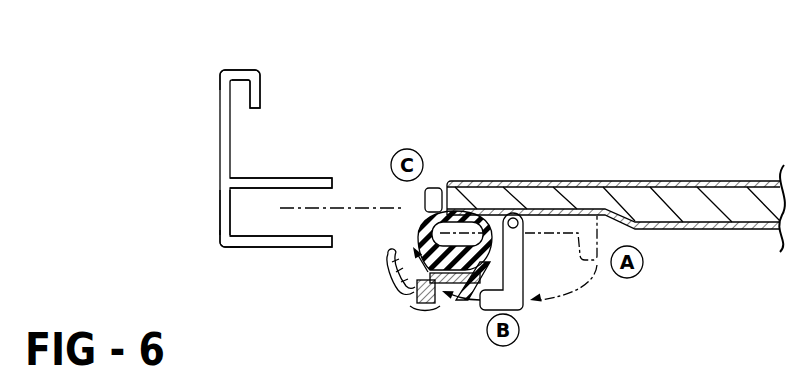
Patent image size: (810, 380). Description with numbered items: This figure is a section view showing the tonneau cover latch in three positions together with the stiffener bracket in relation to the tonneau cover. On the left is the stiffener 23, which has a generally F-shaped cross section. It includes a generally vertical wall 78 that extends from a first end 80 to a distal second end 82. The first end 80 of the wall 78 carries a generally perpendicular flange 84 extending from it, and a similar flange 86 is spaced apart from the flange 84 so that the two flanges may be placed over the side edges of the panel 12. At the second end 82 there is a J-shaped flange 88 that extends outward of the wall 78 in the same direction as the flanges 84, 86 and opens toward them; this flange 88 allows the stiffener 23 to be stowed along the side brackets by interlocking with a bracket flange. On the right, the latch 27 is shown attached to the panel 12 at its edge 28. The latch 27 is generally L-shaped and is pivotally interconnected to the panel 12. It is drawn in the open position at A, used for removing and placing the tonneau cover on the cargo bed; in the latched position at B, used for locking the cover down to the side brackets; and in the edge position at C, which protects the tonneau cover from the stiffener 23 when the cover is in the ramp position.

The panel 12 is at (646, 168).
The stiffener 23 is at (221, 152).
The latch 27 is at (622, 228).
The edge 28 is at (445, 178).
The vertical wall 78 is at (223, 212).
The first end 80 is at (222, 237).
The second end 82 is at (221, 78).
The flange 84 is at (280, 245).
The flange 86 is at (262, 180).
The J-shaped flange 88 is at (259, 80).